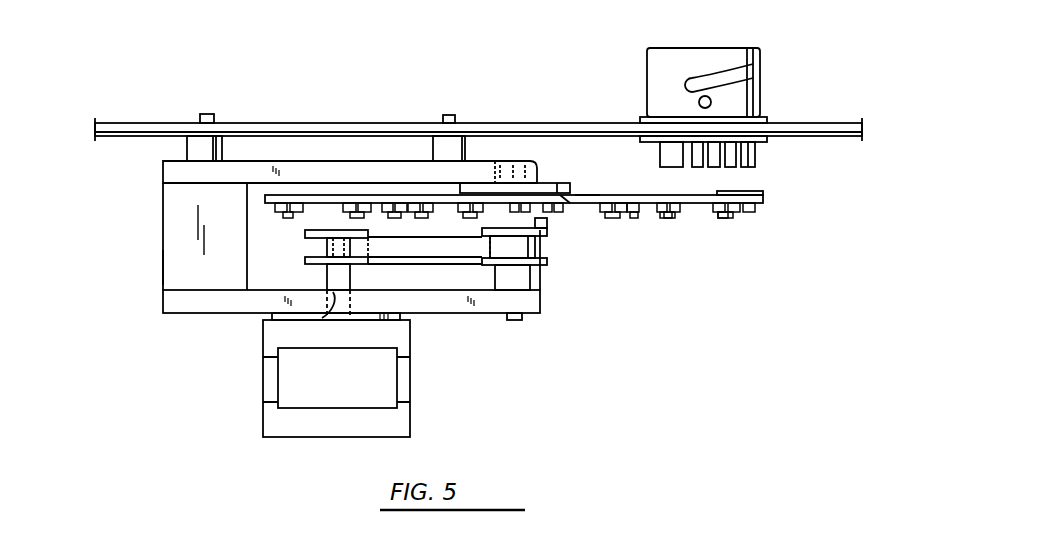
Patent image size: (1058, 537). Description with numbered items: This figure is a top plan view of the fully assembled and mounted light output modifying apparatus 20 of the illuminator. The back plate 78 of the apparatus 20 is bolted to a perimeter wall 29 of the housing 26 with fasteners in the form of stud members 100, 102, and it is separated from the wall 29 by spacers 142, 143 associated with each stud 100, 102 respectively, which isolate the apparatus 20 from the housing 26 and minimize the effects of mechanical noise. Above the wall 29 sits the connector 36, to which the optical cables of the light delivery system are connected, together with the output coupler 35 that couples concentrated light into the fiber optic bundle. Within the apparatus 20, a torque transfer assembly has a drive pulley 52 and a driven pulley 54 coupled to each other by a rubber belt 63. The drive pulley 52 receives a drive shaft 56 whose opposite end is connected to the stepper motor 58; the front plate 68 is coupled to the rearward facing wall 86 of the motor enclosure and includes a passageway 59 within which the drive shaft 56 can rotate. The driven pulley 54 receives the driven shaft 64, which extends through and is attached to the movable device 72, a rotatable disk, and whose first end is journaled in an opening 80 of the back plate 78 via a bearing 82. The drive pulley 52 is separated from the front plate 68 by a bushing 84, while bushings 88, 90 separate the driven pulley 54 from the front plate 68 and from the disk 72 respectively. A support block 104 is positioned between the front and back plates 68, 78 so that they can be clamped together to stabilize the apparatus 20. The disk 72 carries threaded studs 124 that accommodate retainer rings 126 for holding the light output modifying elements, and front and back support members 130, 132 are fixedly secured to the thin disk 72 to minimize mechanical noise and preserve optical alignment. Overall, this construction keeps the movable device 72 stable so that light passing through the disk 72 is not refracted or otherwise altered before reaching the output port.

The light output modifying apparatus 20 is at (652, 348).
The housing 26 is at (830, 120).
The housing wall 29 is at (300, 124).
The output coupler 35 is at (757, 160).
The connector 36 is at (712, 48).
The drive pulley 52 is at (305, 233).
The driven pulley 54 is at (547, 240).
The drive shaft 56 is at (306, 240).
The stepper motor 58 is at (410, 420).
The passageway 59 is at (330, 316).
The belt 63 is at (547, 262).
The driven shaft 64 is at (514, 320).
The front plate 68 is at (163, 305).
The movable device 72 is at (795, 207).
The back plate 78 is at (163, 172).
The opening 80 is at (537, 163).
The bearing 82 is at (490, 182).
The bushing 84 is at (327, 272).
The rearward facing wall 86 is at (400, 312).
The bushing 88 is at (547, 224).
The bushing 90 is at (498, 272).
The stud 100 is at (230, 88).
The stud 102 is at (448, 114).
The support block 104 is at (175, 268).
The studs 124 is at (634, 218).
The retainer ring 126 is at (718, 218).
The front support member 130 is at (580, 206).
The back support member 132 is at (565, 196).
The spacer 142 is at (187, 150).
The spacer 143 is at (433, 150).